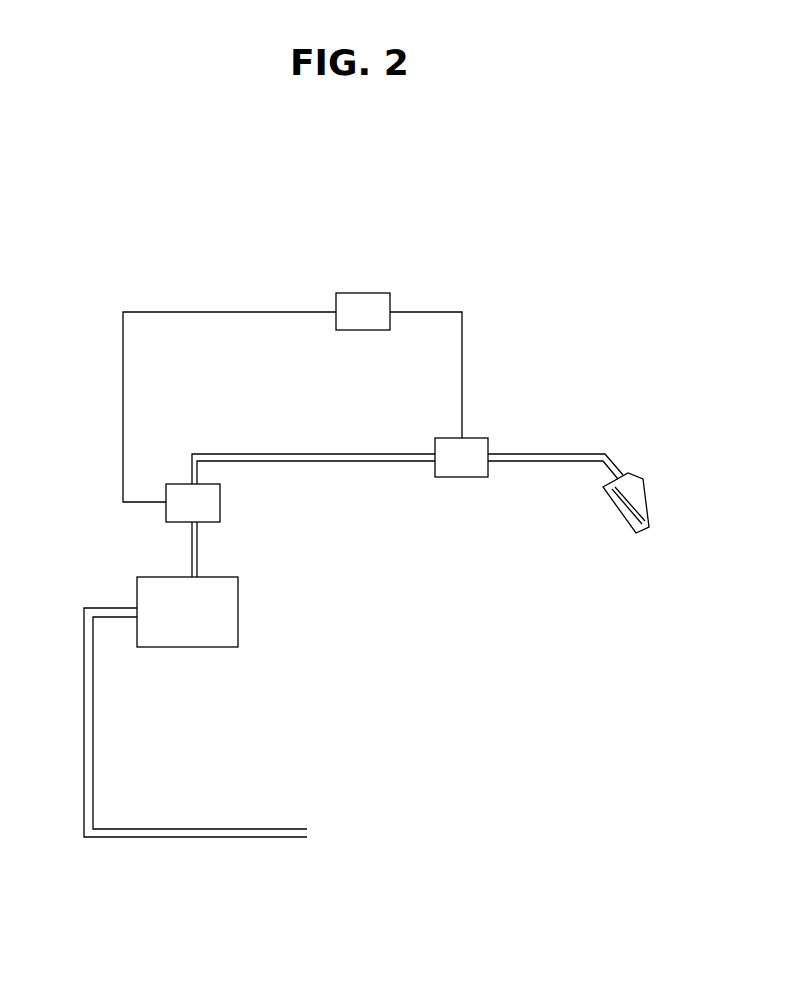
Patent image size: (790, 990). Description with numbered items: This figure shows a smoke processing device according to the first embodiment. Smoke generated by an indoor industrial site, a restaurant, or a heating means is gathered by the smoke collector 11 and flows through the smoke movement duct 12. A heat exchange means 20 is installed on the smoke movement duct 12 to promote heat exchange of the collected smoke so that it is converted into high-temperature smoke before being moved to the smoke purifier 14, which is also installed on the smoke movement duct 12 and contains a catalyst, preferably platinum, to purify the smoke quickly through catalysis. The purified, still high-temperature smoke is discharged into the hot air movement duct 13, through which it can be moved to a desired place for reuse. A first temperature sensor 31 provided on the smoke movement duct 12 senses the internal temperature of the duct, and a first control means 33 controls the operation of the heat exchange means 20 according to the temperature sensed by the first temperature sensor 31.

The smoke collector 11 is at (631, 474).
The smoke movement duct 12 is at (253, 455).
The hot air movement duct 13 is at (140, 838).
The smoke purifier 14 is at (187, 612).
The heat exchange means 20 is at (193, 503).
The first temperature sensor 31 is at (482, 438).
The first control means 33 is at (375, 294).